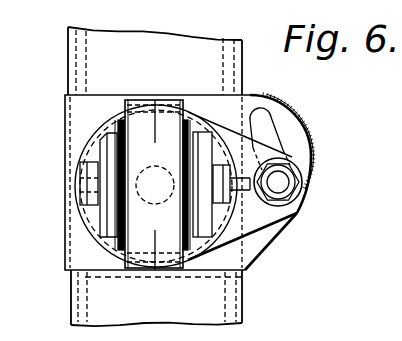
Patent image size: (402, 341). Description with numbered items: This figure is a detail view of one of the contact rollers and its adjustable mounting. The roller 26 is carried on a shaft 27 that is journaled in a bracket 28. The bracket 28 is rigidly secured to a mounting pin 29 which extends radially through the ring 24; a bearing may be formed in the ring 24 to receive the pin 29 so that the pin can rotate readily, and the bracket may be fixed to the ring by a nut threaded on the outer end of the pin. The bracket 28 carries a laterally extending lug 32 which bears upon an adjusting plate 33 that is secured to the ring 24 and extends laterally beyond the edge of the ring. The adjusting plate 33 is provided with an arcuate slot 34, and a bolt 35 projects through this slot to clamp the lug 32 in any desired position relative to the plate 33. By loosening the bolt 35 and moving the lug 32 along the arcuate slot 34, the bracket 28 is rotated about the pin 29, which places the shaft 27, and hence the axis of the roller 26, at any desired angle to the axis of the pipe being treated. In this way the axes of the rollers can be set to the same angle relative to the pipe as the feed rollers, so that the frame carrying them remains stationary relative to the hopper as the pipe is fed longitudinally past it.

The ring 24 is at (83, 52).
The roller 26 is at (163, 120).
The shaft 27 is at (90, 172).
The bracket 28 is at (107, 146).
The mounting pin 29 is at (145, 206).
The lug 32 is at (303, 186).
The adjusting plate 33 is at (265, 102).
The arcuate slot 34 is at (268, 133).
The bolt 35 is at (281, 191).